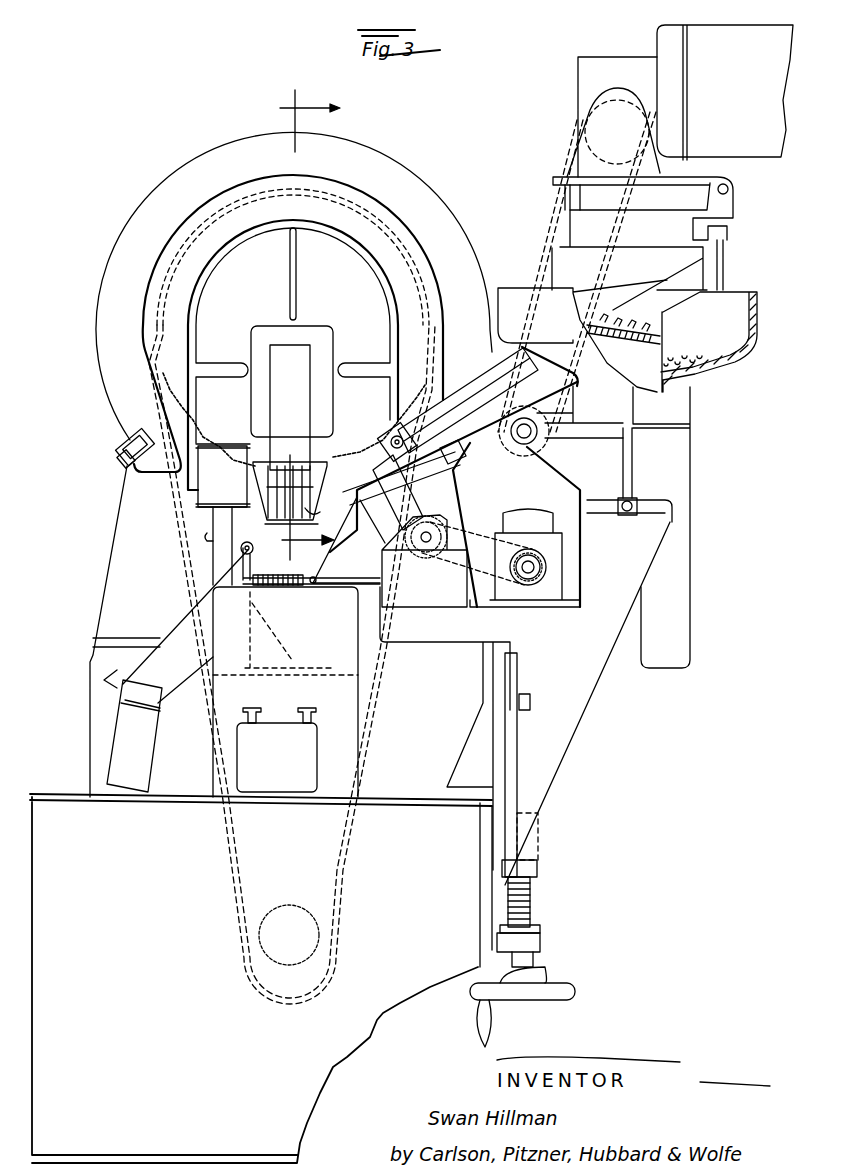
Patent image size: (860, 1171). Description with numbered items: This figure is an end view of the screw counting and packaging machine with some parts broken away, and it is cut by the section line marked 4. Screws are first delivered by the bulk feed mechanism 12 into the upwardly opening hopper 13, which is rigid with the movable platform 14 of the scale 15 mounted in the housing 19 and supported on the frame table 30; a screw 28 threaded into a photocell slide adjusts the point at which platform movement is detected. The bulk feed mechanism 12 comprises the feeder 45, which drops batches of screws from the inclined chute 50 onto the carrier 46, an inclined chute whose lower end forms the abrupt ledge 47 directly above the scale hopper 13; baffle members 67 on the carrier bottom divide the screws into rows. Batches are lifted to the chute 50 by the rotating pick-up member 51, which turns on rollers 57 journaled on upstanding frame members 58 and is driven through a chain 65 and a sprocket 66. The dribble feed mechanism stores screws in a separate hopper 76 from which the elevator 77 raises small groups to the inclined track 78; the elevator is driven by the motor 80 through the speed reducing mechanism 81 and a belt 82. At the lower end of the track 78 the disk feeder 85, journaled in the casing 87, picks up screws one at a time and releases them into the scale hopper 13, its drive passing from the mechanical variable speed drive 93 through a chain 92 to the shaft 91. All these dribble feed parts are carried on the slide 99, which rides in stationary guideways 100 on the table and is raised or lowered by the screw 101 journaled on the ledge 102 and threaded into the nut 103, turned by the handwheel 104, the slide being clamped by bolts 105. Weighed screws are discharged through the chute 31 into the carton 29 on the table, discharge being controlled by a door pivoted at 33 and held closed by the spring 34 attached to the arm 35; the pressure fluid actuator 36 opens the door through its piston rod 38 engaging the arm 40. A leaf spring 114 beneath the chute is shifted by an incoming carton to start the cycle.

The section line 4- 4 is at (299, 325).
The bulk feed mechanism 12 is at (172, 171).
The hopper 13 is at (318, 552).
The movable platform 14 is at (318, 670).
The scale 15 is at (369, 665).
The housing 19 is at (352, 704).
The screw 28 is at (305, 720).
The carton 29 is at (110, 752).
The frame table 30 is at (75, 797).
The chute 31 is at (187, 632).
The pivot 33 is at (247, 541).
The spring 34 is at (300, 588).
The arm 35 is at (251, 568).
The pressure fluid actuator 36 is at (205, 490).
The piston rod 38 is at (213, 526).
The arm 40 is at (205, 541).
The feeder 45 is at (343, 303).
The carrier 46 is at (315, 463).
The ledge 47 is at (312, 516).
The chute 50 is at (300, 416).
The member 51 is at (445, 222).
The rollers 57 is at (133, 468).
The frame members 58 is at (123, 507).
The chain 65 is at (230, 840).
The sprocket 66 is at (160, 408).
The baffle members 67 is at (300, 470).
The hopper 76 is at (740, 318).
The elevator 77 is at (660, 337).
The track 78 is at (489, 379).
The motor 80 is at (666, 36).
The speed reducing mechanism 81 is at (590, 68).
The belt 82 is at (553, 192).
The feeder 85 is at (395, 491).
The casing 87 is at (380, 522).
The shaft 91 is at (426, 546).
The chain 92 is at (496, 540).
The mechanical variable speed drive 93 is at (555, 579).
The slide 99 is at (502, 680).
The guideways 100 is at (495, 848).
The screw 101 is at (532, 906).
The ledge 102 is at (541, 942).
The nut 103 is at (534, 849).
The handwheel 104 is at (577, 991).
The bolts 105 is at (531, 703).
The leaf spring 114 is at (158, 762).